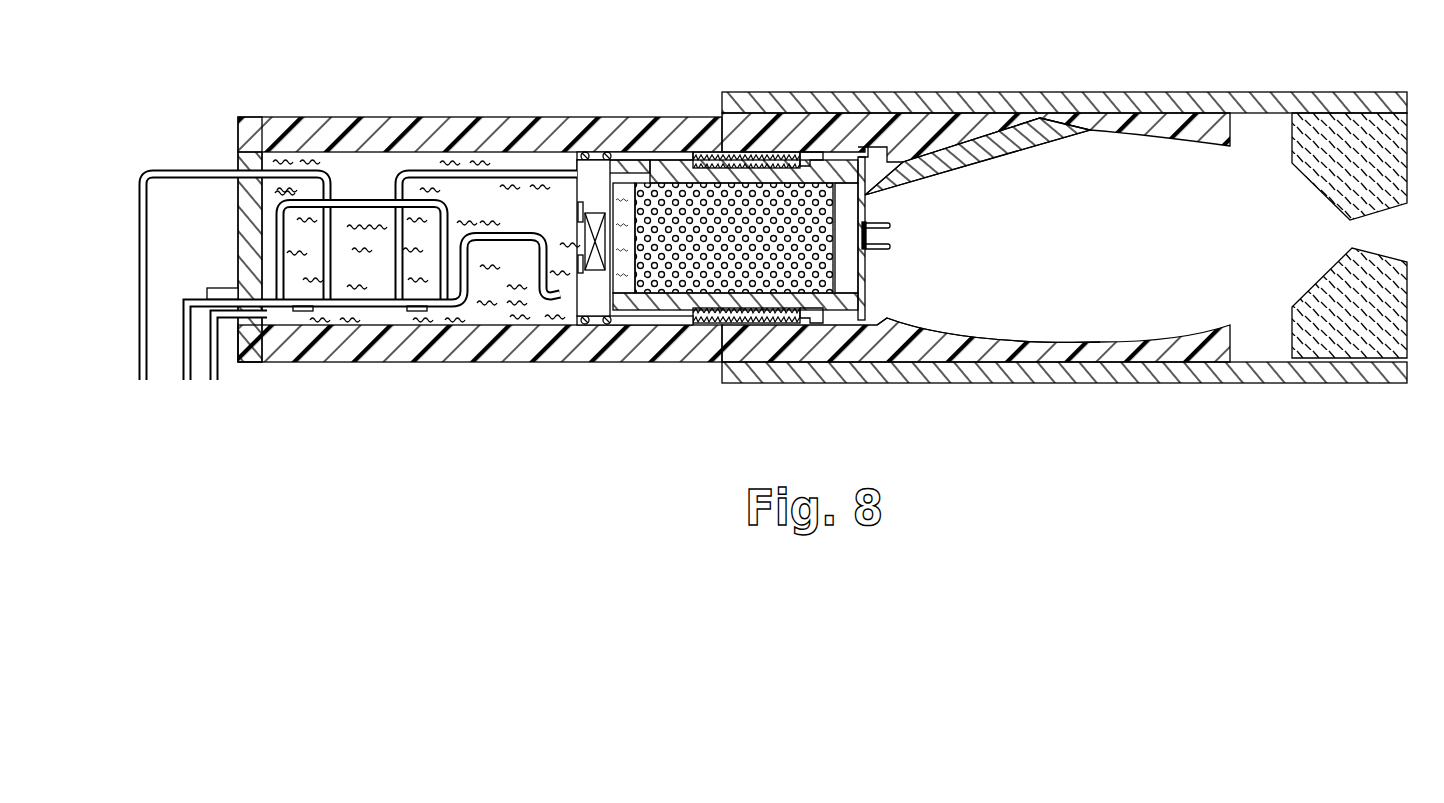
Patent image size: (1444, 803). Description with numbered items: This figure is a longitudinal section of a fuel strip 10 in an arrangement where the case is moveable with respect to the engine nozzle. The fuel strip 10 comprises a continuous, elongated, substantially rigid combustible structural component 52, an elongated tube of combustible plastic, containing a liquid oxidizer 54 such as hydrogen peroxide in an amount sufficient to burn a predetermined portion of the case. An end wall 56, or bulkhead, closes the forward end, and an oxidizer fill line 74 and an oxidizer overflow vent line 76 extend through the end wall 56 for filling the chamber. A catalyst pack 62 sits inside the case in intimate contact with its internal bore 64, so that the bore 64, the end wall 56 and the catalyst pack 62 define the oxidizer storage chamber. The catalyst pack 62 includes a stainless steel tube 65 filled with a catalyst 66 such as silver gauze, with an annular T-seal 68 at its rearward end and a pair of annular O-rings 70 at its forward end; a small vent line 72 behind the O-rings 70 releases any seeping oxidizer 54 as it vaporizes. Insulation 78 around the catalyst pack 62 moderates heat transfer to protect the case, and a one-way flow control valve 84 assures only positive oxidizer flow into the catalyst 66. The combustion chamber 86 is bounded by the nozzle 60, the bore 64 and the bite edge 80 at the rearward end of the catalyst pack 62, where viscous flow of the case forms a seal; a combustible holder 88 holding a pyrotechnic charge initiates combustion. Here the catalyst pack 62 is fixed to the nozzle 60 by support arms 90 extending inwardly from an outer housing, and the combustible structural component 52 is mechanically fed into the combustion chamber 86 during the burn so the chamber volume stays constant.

The fuel strip 10 is at (404, 78).
The combustible structural component 52 is at (470, 117).
The liquid oxidizer 54 is at (498, 216).
The end wall 56 is at (240, 250).
The nozzle 60 is at (1325, 285).
The catalyst pack 62 is at (576, 242).
The internal bore 64 is at (383, 155).
The stainless steel tube 65 is at (668, 172).
The catalyst 66 is at (835, 262).
The annular T-seal 68 is at (800, 326).
The annular O-rings 70 is at (603, 152).
The vent line 72 is at (140, 362).
The oxidizer fill line 74 is at (186, 362).
The oxidizer overflow vent line 76 is at (218, 362).
The insulation 78 is at (715, 328).
The bite edge 80 is at (889, 320).
The one-way flow control valve 84 is at (598, 272).
The combustion chamber 86 is at (1288, 235).
The combustible holder 88 is at (880, 222).
The support arms 90 is at (998, 150).